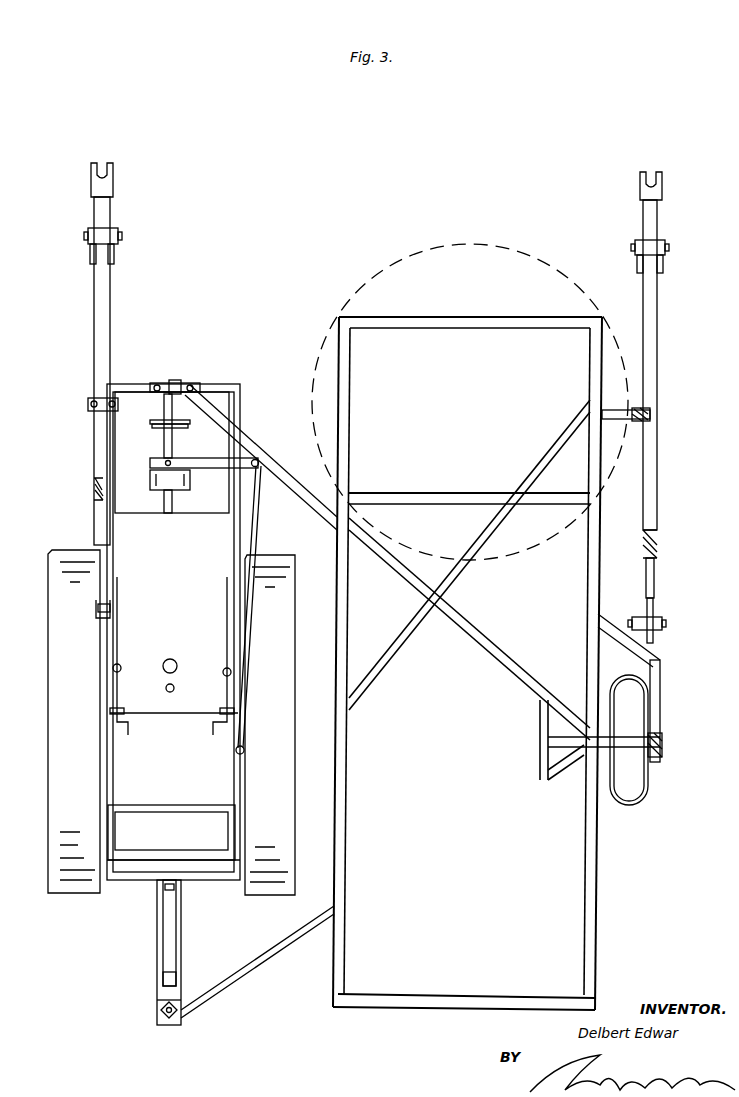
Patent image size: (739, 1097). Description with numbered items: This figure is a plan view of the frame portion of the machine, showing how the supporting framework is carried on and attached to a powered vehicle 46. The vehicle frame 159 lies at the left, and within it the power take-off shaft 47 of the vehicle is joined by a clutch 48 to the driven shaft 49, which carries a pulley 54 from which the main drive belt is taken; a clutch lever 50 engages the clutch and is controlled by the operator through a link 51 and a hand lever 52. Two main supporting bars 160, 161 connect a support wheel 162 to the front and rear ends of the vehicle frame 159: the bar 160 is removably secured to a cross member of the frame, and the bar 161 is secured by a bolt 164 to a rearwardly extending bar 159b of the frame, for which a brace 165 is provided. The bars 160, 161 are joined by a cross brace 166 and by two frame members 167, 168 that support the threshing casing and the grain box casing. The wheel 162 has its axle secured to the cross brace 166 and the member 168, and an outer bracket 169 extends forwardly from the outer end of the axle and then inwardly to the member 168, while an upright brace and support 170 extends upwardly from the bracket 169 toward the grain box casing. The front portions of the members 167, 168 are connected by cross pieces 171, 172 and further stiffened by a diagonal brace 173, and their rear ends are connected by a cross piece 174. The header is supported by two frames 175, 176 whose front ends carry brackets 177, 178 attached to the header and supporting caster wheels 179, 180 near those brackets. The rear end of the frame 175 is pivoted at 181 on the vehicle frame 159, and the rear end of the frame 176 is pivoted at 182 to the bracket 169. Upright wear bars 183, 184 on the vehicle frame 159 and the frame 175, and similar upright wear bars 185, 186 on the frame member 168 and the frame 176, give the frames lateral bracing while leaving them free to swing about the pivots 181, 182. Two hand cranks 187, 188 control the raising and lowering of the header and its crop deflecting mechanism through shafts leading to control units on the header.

The powered vehicle 46 is at (183, 582).
The power take-off shaft 47 is at (164, 498).
The clutch 48 is at (151, 478).
The driven shaft 49 is at (164, 443).
The clutch lever 50 is at (216, 468).
The link 51 is at (247, 607).
The hand lever 52 is at (244, 762).
The pulley 54 is at (188, 426).
The vehicle frame 159 is at (132, 388).
The rearwardly extending bar 159b is at (160, 997).
The main supporting bar 160 is at (463, 628).
The main supporting bar 161 is at (268, 958).
The support wheel 162 is at (628, 802).
The bolt 164 is at (168, 1018).
The brace 165 is at (165, 922).
The cross brace 166 is at (540, 760).
The frame member 167 is at (345, 733).
The frame member 168 is at (590, 657).
The outer bracket 169 is at (660, 712).
The upright brace and support 170 is at (660, 755).
The cross piece 171 is at (437, 325).
The cross piece 172 is at (428, 497).
The diagonal brace 173 is at (445, 587).
The cross piece 174 is at (470, 1003).
The frame 175 is at (110, 318).
The frame 176 is at (658, 327).
The bracket 177 is at (115, 187).
The bracket 178 is at (641, 188).
The caster wheel 179 is at (94, 262).
The caster wheel 180 is at (638, 270).
The pivot 181 is at (97, 611).
The pivot 182 is at (660, 627).
The upright wear bar 183 is at (118, 404).
The upright wear bar 184 is at (88, 405).
The upright wear bar 185 is at (610, 408).
The upright wear bar 186 is at (655, 416).
The hand crank 187 is at (128, 736).
The hand crank 188 is at (213, 736).